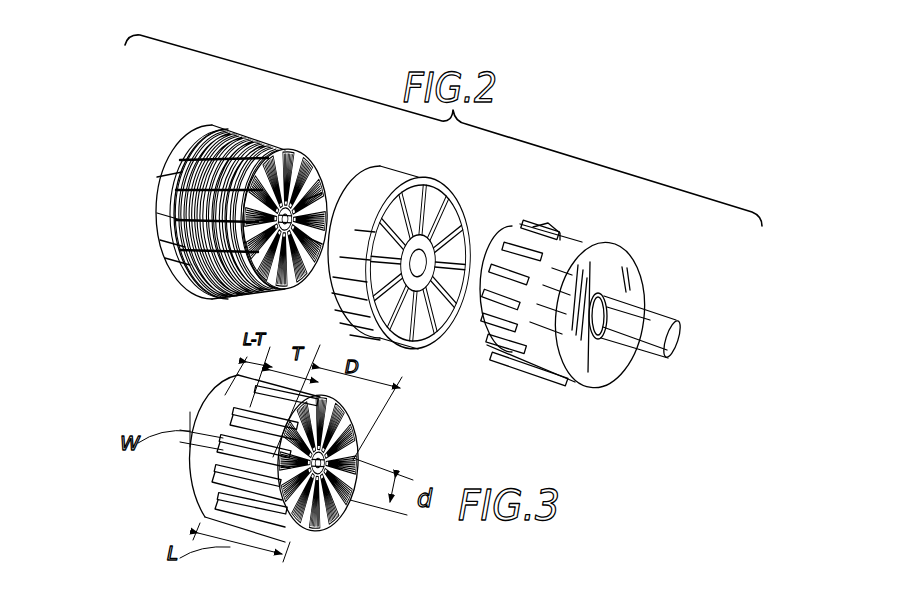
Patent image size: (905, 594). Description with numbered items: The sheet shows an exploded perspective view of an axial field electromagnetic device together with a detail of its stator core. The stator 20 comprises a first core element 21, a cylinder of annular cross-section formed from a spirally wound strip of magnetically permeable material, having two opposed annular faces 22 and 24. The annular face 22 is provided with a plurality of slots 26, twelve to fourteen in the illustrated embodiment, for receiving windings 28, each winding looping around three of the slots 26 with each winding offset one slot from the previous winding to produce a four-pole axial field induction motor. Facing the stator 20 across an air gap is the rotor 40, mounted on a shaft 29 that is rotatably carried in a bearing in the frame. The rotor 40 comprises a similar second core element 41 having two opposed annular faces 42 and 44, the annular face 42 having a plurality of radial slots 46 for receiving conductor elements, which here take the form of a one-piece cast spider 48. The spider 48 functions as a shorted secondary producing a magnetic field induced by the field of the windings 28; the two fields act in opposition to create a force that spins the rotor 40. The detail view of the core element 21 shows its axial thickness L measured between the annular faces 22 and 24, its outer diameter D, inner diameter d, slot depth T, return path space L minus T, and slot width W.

In FIG. 2, the stator 20 is at (246, 126).
In FIG. 2, the first core element 21 is at (172, 230).
In FIG. 3, the first core element 21 is at (157, 474).
In FIG. 2, the annular face 22 is at (276, 280).
In FIG. 3, the annular face 22 is at (317, 463).
In FIG. 2, the annular face 24 is at (160, 213).
In FIG. 3, the annular face 24 is at (207, 405).
In FIG. 2, the slots 26 is at (318, 178).
In FIG. 2, the windings 28 is at (208, 268).
In FIG. 2, the shaft 29 is at (646, 320).
In FIG. 2, the rotor 40 is at (489, 192).
In FIG. 2, the second core element 41 is at (584, 246).
In FIG. 2, the annular face 42 is at (478, 330).
In FIG. 2, the annular face 44 is at (592, 364).
In FIG. 2, the radial slots 46 is at (532, 232).
In FIG. 2, the spider 48 is at (417, 173).